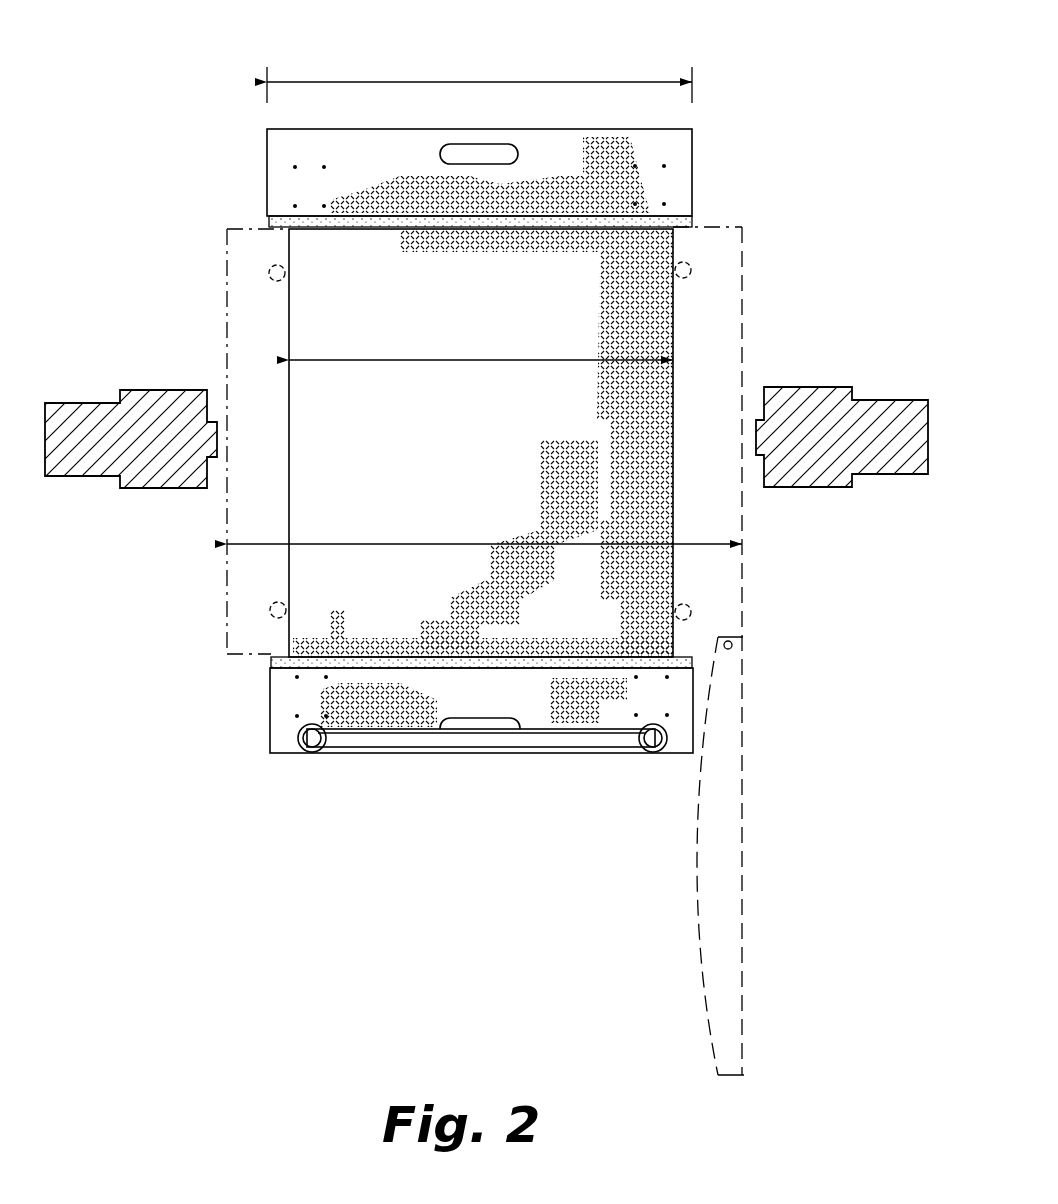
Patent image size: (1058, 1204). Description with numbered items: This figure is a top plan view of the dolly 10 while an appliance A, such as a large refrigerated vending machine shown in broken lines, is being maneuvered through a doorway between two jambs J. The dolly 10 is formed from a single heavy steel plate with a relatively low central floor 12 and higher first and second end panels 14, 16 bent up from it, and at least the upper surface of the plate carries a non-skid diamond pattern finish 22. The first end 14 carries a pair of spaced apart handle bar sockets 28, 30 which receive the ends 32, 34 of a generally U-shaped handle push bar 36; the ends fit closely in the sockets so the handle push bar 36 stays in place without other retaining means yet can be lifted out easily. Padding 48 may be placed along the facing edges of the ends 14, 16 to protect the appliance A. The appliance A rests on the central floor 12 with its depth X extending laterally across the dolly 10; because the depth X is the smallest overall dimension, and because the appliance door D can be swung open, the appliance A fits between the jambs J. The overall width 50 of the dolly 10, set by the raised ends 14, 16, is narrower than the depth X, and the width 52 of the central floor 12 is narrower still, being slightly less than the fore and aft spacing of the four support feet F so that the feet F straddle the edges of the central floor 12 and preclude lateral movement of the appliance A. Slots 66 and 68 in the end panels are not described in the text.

The dolly 10 is at (493, 832).
The central floor area 12 is at (424, 429).
The first end panel 14 is at (270, 708).
The second end panel 16 is at (267, 165).
The non-skid diamond pattern finish 22 is at (563, 208).
The handle bar socket 28 is at (300, 740).
The handle bar socket 30 is at (665, 727).
The handle bar end 32 is at (313, 750).
The handle bar end 34 is at (647, 753).
The handle push bar 36 is at (425, 748).
The padding 48 is at (269, 221).
The overall width of the dolly 50 is at (457, 82).
The width of the central floor portion 52 is at (457, 360).
The handle slot 66 is at (480, 718).
The handle slot 68 is at (440, 154).
The depth of the appliance X is at (458, 544).
The support feet F is at (277, 273).
The appliance A is at (228, 303).
The door jambs J is at (208, 488).
The appliance door D is at (744, 813).